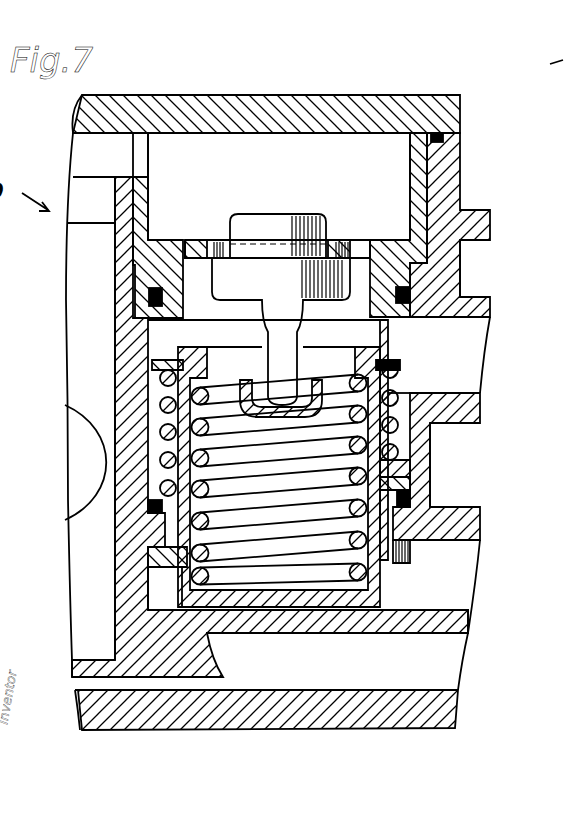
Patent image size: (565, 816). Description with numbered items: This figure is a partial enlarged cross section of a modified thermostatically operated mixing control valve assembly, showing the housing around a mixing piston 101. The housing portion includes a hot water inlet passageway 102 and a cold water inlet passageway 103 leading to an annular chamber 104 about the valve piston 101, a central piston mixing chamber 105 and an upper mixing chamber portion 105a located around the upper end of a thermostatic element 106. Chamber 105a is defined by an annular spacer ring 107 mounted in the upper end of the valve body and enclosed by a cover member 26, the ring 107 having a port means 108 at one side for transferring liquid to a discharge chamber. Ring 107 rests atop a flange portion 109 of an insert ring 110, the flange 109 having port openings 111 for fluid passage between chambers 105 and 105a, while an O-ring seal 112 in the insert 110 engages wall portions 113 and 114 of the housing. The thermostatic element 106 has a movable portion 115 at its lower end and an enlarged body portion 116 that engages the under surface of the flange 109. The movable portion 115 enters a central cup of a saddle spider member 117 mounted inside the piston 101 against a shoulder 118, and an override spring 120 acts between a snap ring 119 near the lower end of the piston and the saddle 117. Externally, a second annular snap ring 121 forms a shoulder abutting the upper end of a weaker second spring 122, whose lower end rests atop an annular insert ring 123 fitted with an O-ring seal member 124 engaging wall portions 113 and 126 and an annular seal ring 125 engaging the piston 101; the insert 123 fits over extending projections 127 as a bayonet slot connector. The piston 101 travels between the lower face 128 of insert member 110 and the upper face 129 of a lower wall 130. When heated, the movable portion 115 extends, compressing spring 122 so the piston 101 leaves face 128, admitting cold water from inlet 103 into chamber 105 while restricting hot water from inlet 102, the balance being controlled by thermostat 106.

The cover member 26 is at (222, 103).
The mixing piston 101 is at (394, 347).
The hot water inlet passageway 102 is at (480, 592).
The cold water inlet passageway 103 is at (472, 377).
The annular chamber 104 is at (162, 345).
The central piston mixing chamber 105 is at (193, 287).
The upper mixing chamber portion 105a is at (312, 165).
The thermostatic element 106 is at (288, 206).
The annular spacer ring 107 is at (148, 212).
The port means 108 is at (140, 159).
The flange portion 109 is at (413, 251).
The insert ring 110 is at (383, 235).
The port openings 111 is at (218, 240).
The O-ring seal 112 is at (410, 296).
The wall portion 113 is at (130, 306).
The wall portion 114 is at (443, 173).
The movable portion 115 is at (292, 384).
The enlarged body portion 116 is at (292, 289).
The saddle spider member 117 is at (198, 385).
The shoulder 118 is at (236, 346).
The snap ring 119 is at (360, 582).
The override spring 120 is at (313, 580).
The second annular snap ring 121 is at (405, 360).
The second spring 122 is at (163, 404).
The annular insert ring 123 is at (393, 479).
The O-ring seal member 124 is at (383, 478).
The annular seal ring 125 is at (410, 466).
The wall portion 126 is at (410, 498).
The extending projections 127 is at (157, 527).
The lower face 128 is at (148, 331).
The upper face 129 is at (390, 620).
The lower wall 130 is at (423, 627).